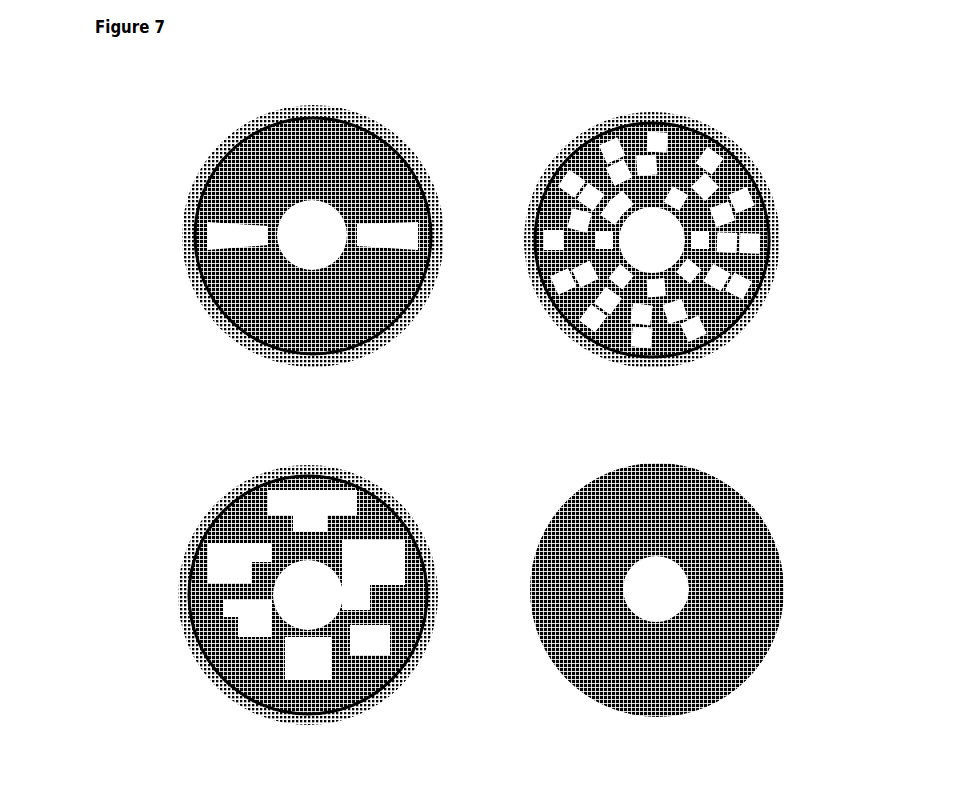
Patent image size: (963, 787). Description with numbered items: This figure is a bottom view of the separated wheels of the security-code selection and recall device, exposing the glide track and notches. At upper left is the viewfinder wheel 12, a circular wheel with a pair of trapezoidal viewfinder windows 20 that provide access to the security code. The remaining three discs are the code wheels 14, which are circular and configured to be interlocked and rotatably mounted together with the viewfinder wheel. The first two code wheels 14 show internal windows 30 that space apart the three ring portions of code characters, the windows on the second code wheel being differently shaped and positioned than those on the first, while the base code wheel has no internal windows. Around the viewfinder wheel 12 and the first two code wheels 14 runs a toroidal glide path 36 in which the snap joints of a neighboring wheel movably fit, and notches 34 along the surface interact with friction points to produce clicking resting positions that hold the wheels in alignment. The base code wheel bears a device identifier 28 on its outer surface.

The viewfinder wheel 12 is at (207, 146).
The viewfinder windows 20 is at (380, 223).
The code wheels 14 is at (551, 436).
The internal windows 30 is at (632, 193).
The glide path 36 is at (337, 487).
The notches 34 is at (667, 350).
The device identifier 28 is at (624, 472).